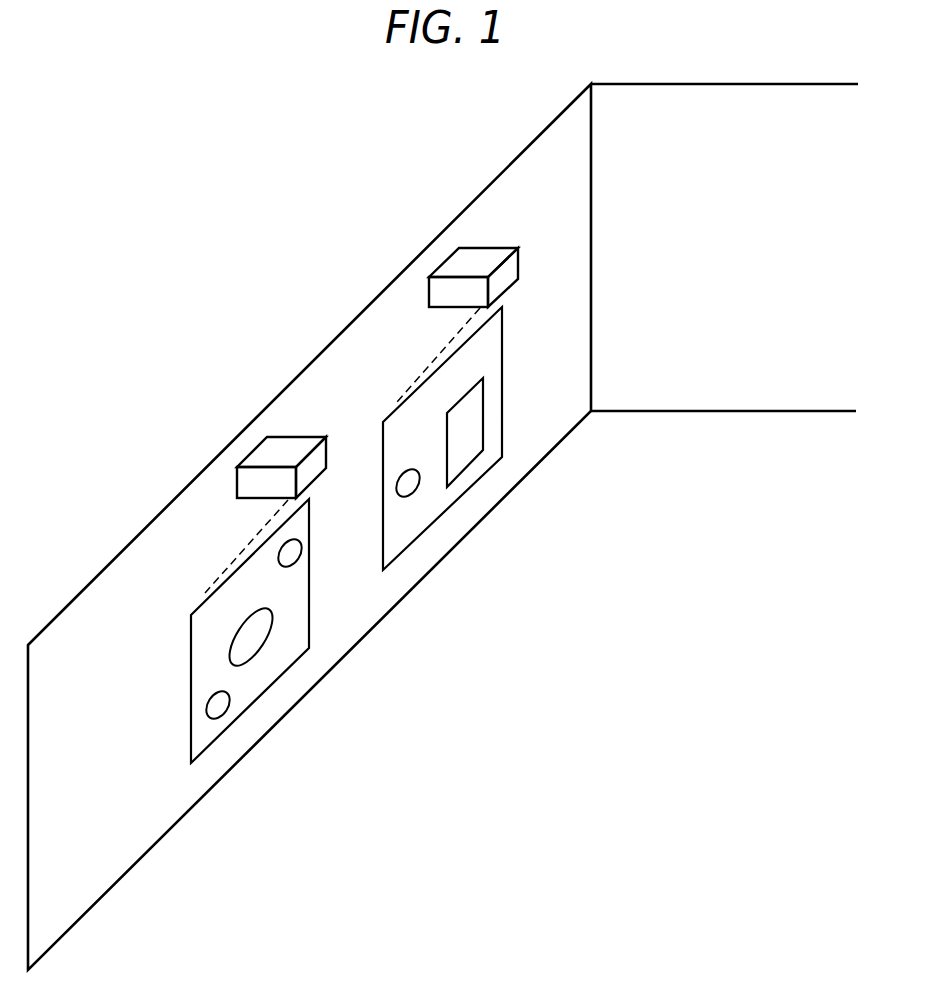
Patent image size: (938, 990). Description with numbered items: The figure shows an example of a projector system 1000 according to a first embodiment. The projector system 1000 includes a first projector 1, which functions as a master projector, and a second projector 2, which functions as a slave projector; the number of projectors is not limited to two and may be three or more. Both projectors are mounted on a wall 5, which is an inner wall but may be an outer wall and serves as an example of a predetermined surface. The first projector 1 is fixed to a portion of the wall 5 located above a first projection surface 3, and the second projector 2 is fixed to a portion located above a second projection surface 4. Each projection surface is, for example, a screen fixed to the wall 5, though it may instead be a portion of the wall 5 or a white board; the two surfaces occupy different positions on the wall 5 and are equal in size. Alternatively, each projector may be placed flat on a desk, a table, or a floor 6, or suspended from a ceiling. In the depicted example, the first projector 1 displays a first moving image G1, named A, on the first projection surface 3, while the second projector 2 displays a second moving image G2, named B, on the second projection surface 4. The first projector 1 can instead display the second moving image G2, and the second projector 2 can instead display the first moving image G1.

The projector system 1000 is at (302, 306).
The first projector 1 is at (292, 447).
The second projector 2 is at (483, 255).
The first projection surface 3 is at (312, 625).
The second projection surface 4 is at (503, 426).
The wall 5 is at (533, 168).
The floor 6 is at (557, 523).
The first moving image G1 is at (198, 657).
The second moving image G2 is at (490, 365).